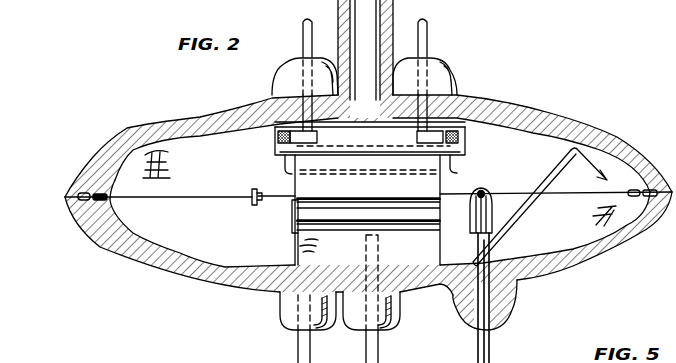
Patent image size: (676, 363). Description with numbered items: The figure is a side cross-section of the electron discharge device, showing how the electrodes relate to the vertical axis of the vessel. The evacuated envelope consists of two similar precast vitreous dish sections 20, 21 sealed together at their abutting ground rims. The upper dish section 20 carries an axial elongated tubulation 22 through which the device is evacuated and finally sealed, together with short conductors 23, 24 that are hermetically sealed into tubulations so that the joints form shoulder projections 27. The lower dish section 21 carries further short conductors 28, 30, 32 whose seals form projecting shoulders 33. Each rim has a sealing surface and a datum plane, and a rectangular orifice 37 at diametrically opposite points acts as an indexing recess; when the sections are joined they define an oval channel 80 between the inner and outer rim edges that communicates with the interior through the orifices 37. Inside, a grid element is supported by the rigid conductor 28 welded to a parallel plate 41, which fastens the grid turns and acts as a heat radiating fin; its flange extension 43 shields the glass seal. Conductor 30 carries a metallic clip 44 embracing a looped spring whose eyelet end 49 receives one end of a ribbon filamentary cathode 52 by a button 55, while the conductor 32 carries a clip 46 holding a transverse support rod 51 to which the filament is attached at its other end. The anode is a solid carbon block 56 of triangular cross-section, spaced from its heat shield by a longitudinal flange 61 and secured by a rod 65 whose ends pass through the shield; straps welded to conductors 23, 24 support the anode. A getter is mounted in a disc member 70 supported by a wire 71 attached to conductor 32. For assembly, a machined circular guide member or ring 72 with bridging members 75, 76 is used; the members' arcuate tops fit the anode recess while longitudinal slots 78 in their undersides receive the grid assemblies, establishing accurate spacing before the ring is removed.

The dish section 20 is at (603, 123).
The dish section 21 is at (620, 243).
The axial elongated tubulation 22 is at (386, 25).
The short conductor 23 is at (300, 29).
The short conductor 24 is at (430, 31).
The shoulder projection 27 is at (284, 69).
The short conductor 28 is at (380, 353).
The short conductor 30 is at (296, 353).
The short conductor 32 is at (491, 353).
The projecting shoulder 33 is at (285, 309).
The rectangular orifice 37 is at (97, 192).
The parallel plate 41 is at (302, 243).
The flange extension 43 is at (368, 266).
The metallic clip 44 is at (292, 219).
The metallic clip 46 is at (492, 207).
The eyelet end 49 is at (250, 190).
The transverse support rod 51 is at (486, 195).
The ribbon filamentary cathode 52 is at (266, 197).
The button 55 is at (252, 203).
The solid carbon block 56 is at (432, 188).
The longitudinal flange 61 is at (466, 150).
The rod 65 is at (284, 161).
The disc member 70 is at (622, 152).
The wire 71 is at (532, 202).
The circular guide member or ring 72 is at (367, 123).
The bridging member 75 is at (277, 136).
The bridging member 76 is at (459, 137).
The longitudinal slot 78 is at (295, 135).
The oval channel 80 is at (76, 197).